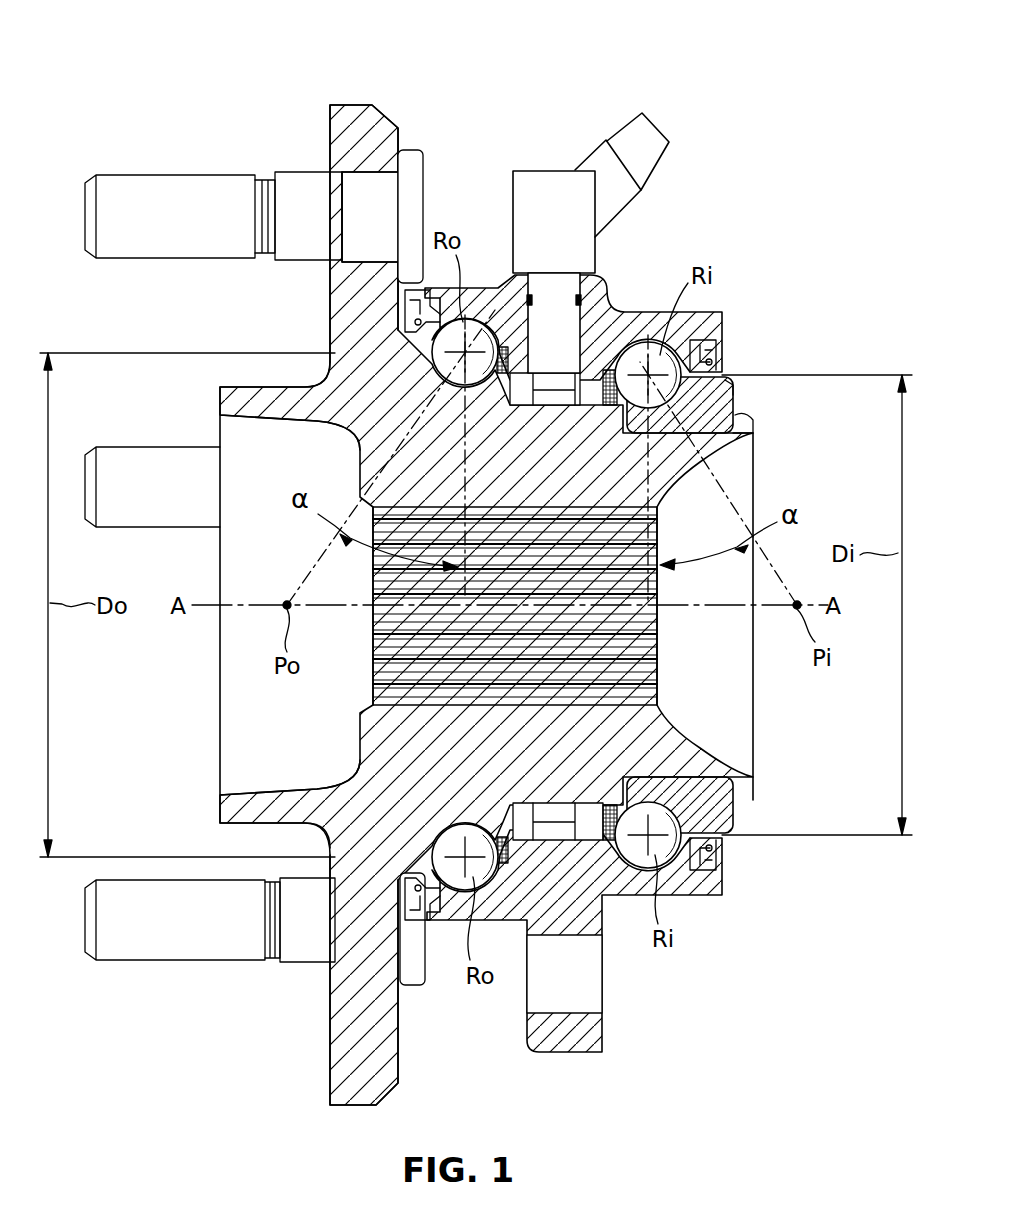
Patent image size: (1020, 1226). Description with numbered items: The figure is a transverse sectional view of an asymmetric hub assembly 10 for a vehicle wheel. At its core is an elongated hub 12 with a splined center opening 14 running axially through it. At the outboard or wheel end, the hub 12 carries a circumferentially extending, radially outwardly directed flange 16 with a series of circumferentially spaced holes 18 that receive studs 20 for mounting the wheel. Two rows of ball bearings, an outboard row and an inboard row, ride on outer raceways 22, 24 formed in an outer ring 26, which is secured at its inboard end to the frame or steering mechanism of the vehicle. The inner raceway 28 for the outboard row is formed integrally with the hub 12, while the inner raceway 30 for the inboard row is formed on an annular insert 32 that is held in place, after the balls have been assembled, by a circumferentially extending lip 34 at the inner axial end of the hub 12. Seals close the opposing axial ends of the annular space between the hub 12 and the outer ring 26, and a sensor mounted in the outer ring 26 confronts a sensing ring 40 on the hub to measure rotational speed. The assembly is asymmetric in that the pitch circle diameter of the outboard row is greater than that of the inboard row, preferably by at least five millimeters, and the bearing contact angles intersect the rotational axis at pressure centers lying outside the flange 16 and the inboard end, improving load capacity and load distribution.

The asymmetric hub assembly 10 is at (688, 79).
The hub 12 is at (700, 746).
The splines 14 is at (595, 700).
The flange 16 is at (332, 1042).
The holes 18 is at (355, 160).
The studs 20 is at (178, 172).
The outer raceway 22 is at (492, 300).
The outer raceway 24 is at (650, 342).
The outer ring 26 is at (712, 308).
The inner raceway 28 is at (328, 382).
The inner raceway 30 is at (737, 437).
The annular insert 32 is at (735, 385).
The lip 34 is at (757, 425).
The sensing ring 40 is at (548, 170).